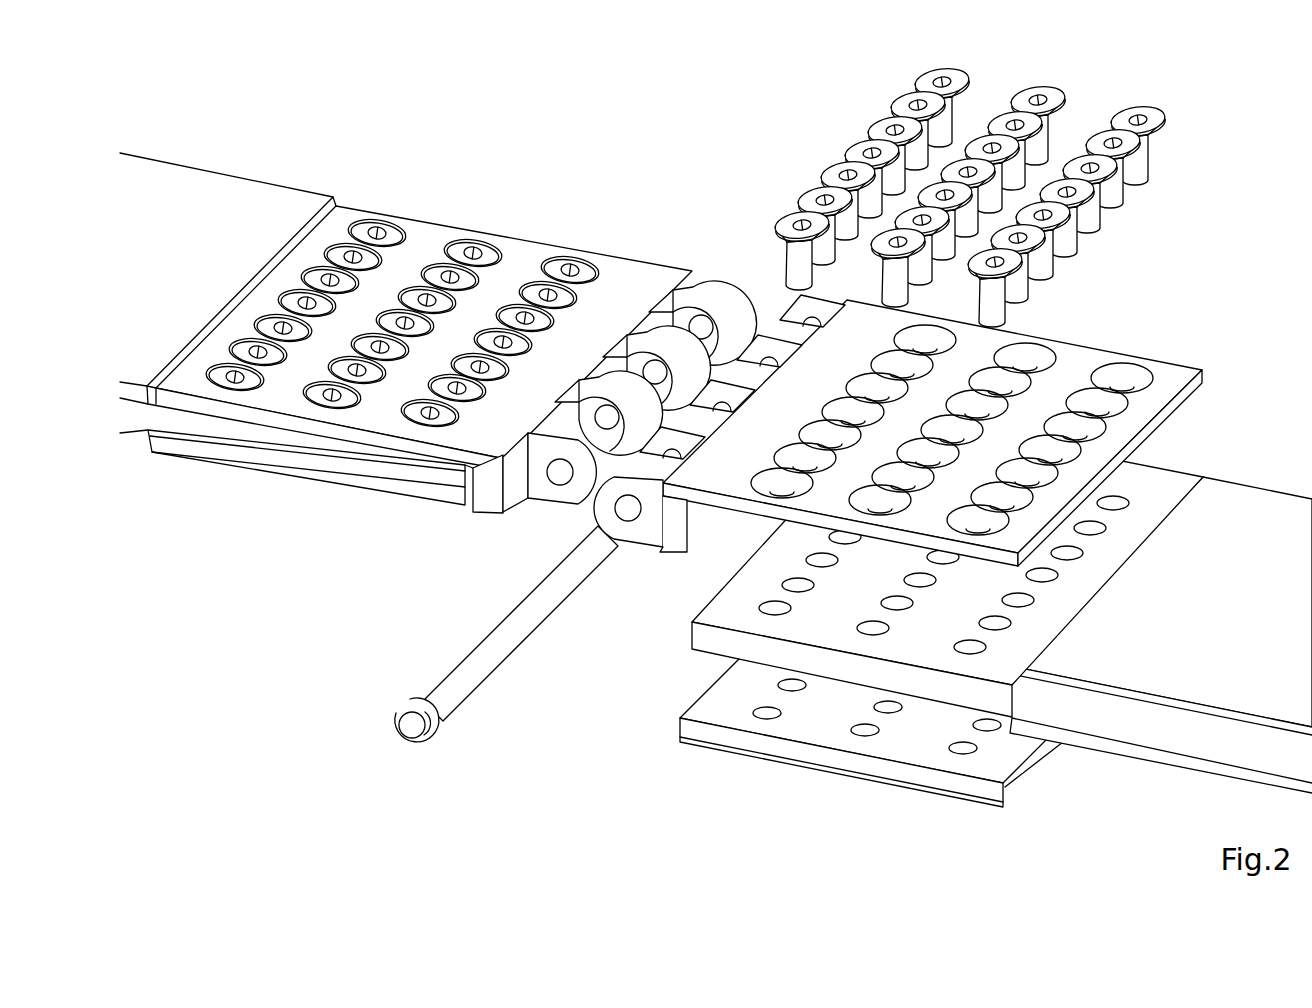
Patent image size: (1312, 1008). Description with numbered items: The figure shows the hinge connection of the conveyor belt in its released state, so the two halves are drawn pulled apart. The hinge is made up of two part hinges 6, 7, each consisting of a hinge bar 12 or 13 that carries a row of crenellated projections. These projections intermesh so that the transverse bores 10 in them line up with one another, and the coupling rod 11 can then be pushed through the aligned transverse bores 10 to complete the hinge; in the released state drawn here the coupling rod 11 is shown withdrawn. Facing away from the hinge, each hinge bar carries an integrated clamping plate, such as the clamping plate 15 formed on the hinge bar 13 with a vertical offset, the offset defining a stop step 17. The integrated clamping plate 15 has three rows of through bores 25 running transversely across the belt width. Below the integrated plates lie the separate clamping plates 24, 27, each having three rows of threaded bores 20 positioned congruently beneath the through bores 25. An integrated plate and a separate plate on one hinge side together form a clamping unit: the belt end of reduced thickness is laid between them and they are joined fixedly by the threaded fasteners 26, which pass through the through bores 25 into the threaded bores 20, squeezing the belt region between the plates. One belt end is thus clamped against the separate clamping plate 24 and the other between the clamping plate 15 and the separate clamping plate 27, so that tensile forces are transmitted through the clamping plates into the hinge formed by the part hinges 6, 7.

The part hinge 6 is at (705, 268).
The part hinge 7 is at (608, 500).
The transverse bores 10 is at (560, 472).
The coupling rod 11 is at (492, 657).
The hinge bar 12 is at (482, 482).
The hinge bar 13 is at (675, 520).
The integrated clamping plate 15 is at (735, 511).
The stop step 17 is at (697, 532).
The threaded bores 20 is at (765, 715).
The separate clamping plate 24 is at (307, 474).
The through bores 25 is at (1115, 375).
The threaded fasteners 26 is at (1118, 192).
The separate clamping plate 27 is at (843, 763).